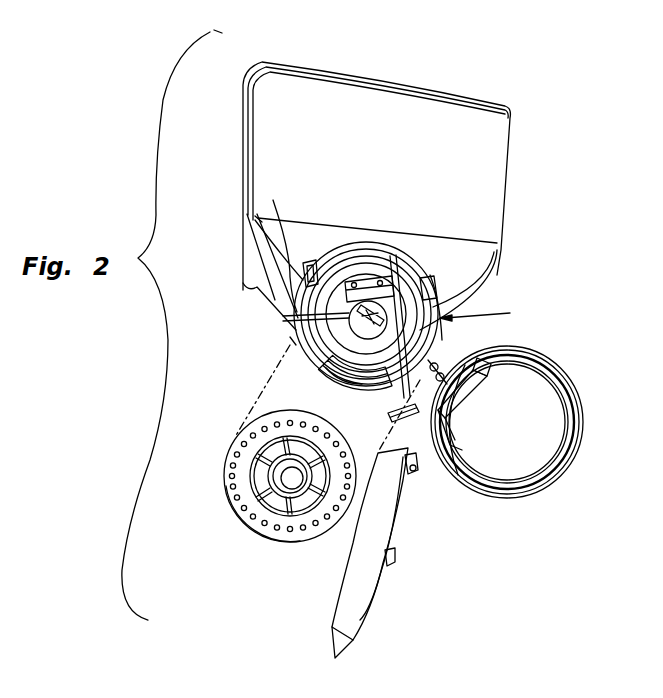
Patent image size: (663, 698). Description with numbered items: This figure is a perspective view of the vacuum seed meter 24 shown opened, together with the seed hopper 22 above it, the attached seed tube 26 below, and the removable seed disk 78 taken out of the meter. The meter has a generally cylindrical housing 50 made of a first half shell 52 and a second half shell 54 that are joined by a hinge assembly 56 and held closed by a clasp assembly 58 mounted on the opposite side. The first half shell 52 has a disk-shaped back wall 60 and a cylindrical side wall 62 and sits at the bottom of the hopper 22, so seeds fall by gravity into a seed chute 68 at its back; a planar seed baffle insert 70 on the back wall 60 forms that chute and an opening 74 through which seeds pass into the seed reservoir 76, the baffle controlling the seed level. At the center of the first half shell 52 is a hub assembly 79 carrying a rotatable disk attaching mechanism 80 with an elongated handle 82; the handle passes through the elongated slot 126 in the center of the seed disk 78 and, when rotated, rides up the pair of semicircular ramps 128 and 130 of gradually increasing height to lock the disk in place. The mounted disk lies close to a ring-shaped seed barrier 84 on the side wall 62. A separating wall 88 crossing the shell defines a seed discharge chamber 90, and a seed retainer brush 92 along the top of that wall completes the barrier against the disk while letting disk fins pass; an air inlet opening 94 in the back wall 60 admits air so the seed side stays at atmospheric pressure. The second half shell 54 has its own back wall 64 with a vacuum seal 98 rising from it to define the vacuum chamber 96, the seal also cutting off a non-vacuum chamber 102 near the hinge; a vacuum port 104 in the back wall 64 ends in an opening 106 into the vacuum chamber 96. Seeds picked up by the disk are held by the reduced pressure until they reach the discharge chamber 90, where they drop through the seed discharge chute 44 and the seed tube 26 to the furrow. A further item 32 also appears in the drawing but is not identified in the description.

The seed hopper 22 is at (328, 123).
The seed meter 24 is at (390, 529).
The seed tube 26 is at (340, 644).
The axis 32 is at (285, 337).
The seed discharge chute 44 is at (412, 475).
The housing 50 is at (529, 423).
The first half shell 52 is at (292, 338).
The second half shell 54 is at (521, 500).
The hinge assembly 56 is at (448, 378).
The clasp assembly 58 is at (298, 232).
The back wall 60 is at (258, 218).
The side wall 62 is at (470, 302).
The back wall 64 is at (547, 465).
The seed chute 68 is at (330, 373).
The seed baffle insert 70 is at (300, 332).
The opening 74 is at (355, 377).
The seed reservoir 76 is at (256, 391).
The seed disk 78 is at (266, 500).
The hub assembly 79 is at (430, 275).
The disk attaching mechanism 80 is at (300, 328).
The handle 82 is at (355, 270).
The seed barrier 84 is at (250, 243).
The separating wall 88 is at (488, 268).
The seed discharge chamber 90 is at (390, 414).
The seed retainer brush 92 is at (420, 270).
The air inlet opening 94 is at (390, 272).
The vacuum chamber 96 is at (552, 440).
The vacuum seal 98 is at (542, 377).
The non-vacuum chamber 102 is at (477, 402).
The vacuum port 104 is at (447, 490).
The opening 106 is at (464, 449).
The elongated slot 126 is at (257, 482).
The semicircular ramp 128 is at (263, 453).
The semicircular ramp 130 is at (282, 490).